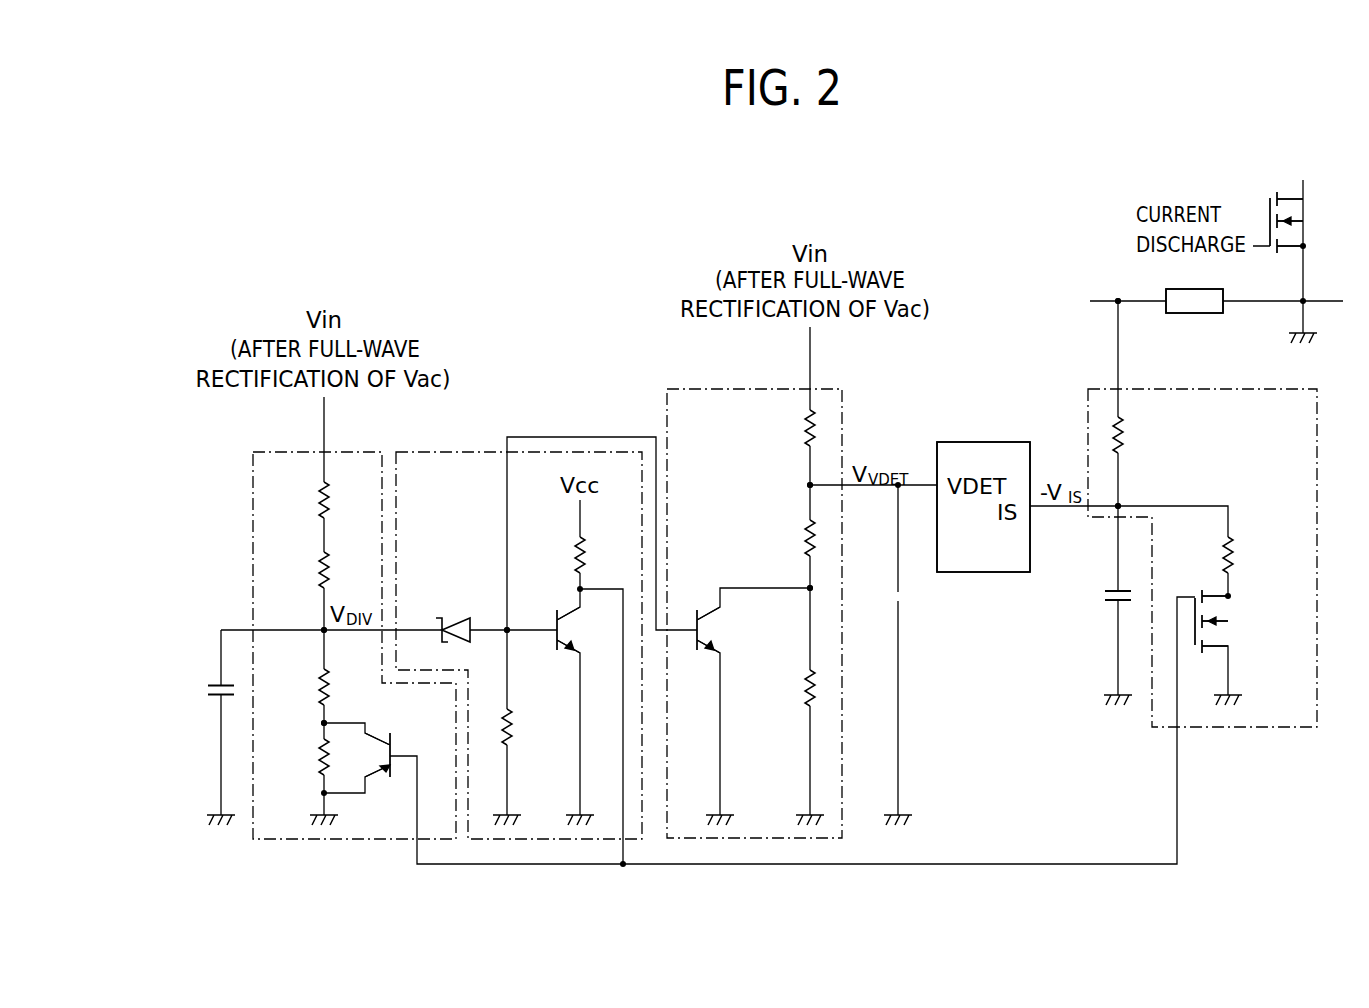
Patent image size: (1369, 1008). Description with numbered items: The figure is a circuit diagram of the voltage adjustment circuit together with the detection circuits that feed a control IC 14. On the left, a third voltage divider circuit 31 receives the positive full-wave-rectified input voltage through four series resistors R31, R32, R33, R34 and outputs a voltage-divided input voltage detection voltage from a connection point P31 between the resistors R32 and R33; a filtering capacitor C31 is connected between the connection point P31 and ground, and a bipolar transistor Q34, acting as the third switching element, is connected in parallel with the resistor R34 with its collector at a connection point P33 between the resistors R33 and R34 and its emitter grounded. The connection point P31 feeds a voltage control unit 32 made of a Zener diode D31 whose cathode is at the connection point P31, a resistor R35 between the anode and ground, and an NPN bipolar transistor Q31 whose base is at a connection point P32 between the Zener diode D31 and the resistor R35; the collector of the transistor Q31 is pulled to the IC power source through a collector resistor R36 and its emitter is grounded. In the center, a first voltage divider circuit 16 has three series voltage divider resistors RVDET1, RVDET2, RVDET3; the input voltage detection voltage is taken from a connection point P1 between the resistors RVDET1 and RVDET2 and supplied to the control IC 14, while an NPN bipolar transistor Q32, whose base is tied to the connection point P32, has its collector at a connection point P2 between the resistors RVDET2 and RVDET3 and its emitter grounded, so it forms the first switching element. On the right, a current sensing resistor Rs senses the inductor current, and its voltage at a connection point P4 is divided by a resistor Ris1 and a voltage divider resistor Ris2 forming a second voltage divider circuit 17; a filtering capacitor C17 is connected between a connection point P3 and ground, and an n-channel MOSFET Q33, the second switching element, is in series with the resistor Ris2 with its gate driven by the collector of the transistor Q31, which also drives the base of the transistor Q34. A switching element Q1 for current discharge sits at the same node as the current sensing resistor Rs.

The third voltage divider circuit 31 is at (253, 505).
The voltage control unit 32 is at (473, 452).
The first voltage divider circuit 16 is at (683, 389).
The second voltage divider circuit 17 is at (1218, 389).
The control IC 14 is at (968, 442).
The resistor R31 is at (318, 498).
The resistor R32 is at (318, 568).
The resistor R33 is at (318, 685).
The resistor R34 is at (318, 755).
The resistor R35 is at (513, 727).
The collector resistor R36 is at (575, 554).
The filtering capacitor C31 is at (214, 686).
The filtering capacitor C17 is at (1110, 592).
The Zener diode D31 is at (455, 625).
The NPN-type bipolar transistor Q31 is at (557, 652).
The NPN-type bipolar transistor Q32 is at (697, 614).
The n-channel MOSFET Q33 is at (1200, 596).
The bipolar transistor Q34 is at (390, 760).
The switching element Q1 is at (1269, 210).
The current sensing resistor Rs is at (1194, 287).
The resistor Ris1 is at (1124, 435).
The voltage divider resistor Ris2 is at (1234, 557).
The voltage divider resistor RVDET1 is at (804, 427).
The voltage divider resistor RVDET2 is at (804, 537).
The voltage divider resistor RVDET3 is at (804, 697).
The connection point P1 is at (808, 485).
The connection point P2 is at (808, 590).
The connection point P3 is at (1120, 505).
The connection point P4 is at (1117, 300).
The connection point P31 is at (326, 636).
The connection point P32 is at (507, 630).
The connection point P33 is at (326, 722).